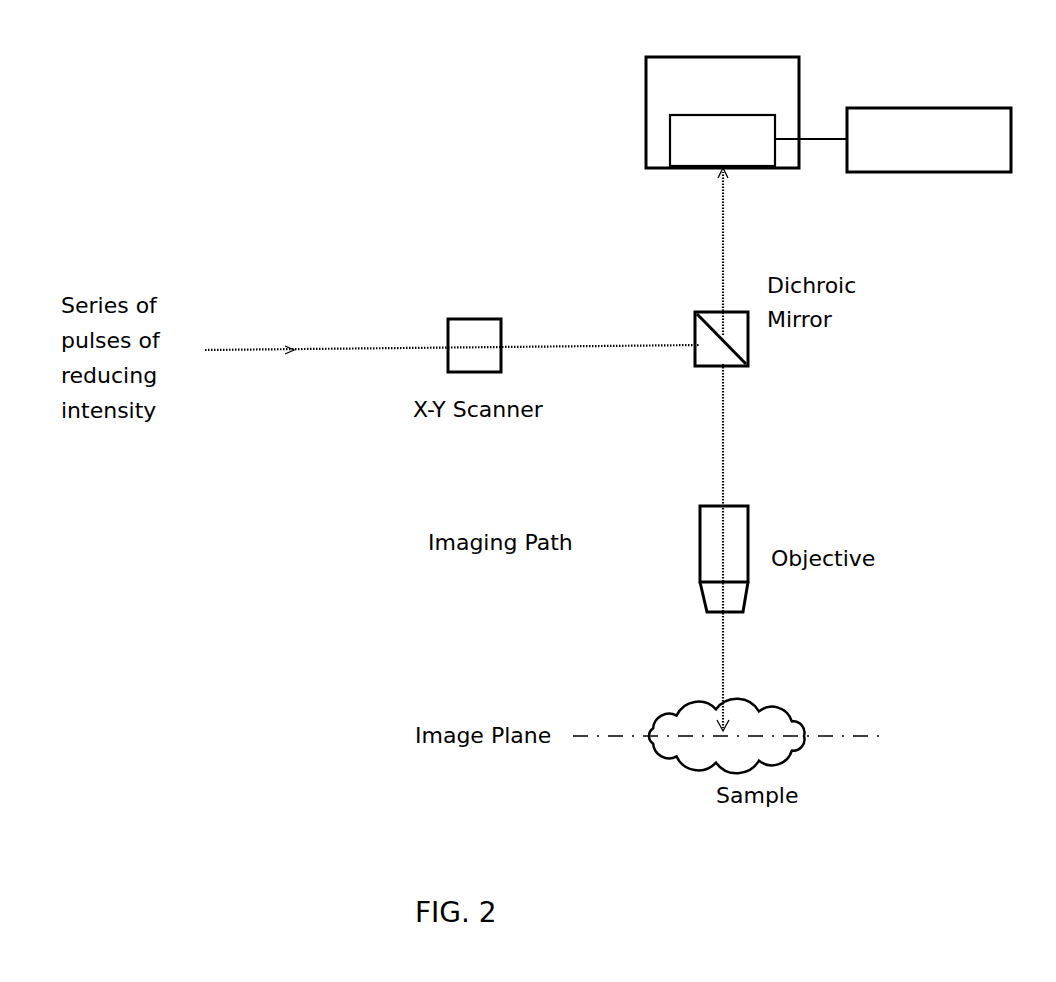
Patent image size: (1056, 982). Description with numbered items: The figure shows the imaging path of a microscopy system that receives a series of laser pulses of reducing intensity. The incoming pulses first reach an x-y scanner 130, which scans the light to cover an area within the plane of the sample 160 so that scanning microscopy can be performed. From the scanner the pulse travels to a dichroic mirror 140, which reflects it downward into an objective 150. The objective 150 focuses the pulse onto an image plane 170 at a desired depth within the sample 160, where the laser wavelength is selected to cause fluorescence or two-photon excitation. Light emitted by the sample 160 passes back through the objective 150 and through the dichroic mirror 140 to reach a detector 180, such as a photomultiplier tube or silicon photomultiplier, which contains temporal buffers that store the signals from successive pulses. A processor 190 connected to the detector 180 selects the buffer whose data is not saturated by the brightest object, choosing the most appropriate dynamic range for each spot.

The x-y scanner 130 is at (503, 311).
The dichroic mirror 140 is at (699, 304).
The objective 150 is at (697, 502).
The sample 160 is at (771, 707).
The image plane 170 is at (592, 731).
The detector 180 is at (646, 53).
The processor 190 is at (927, 94).